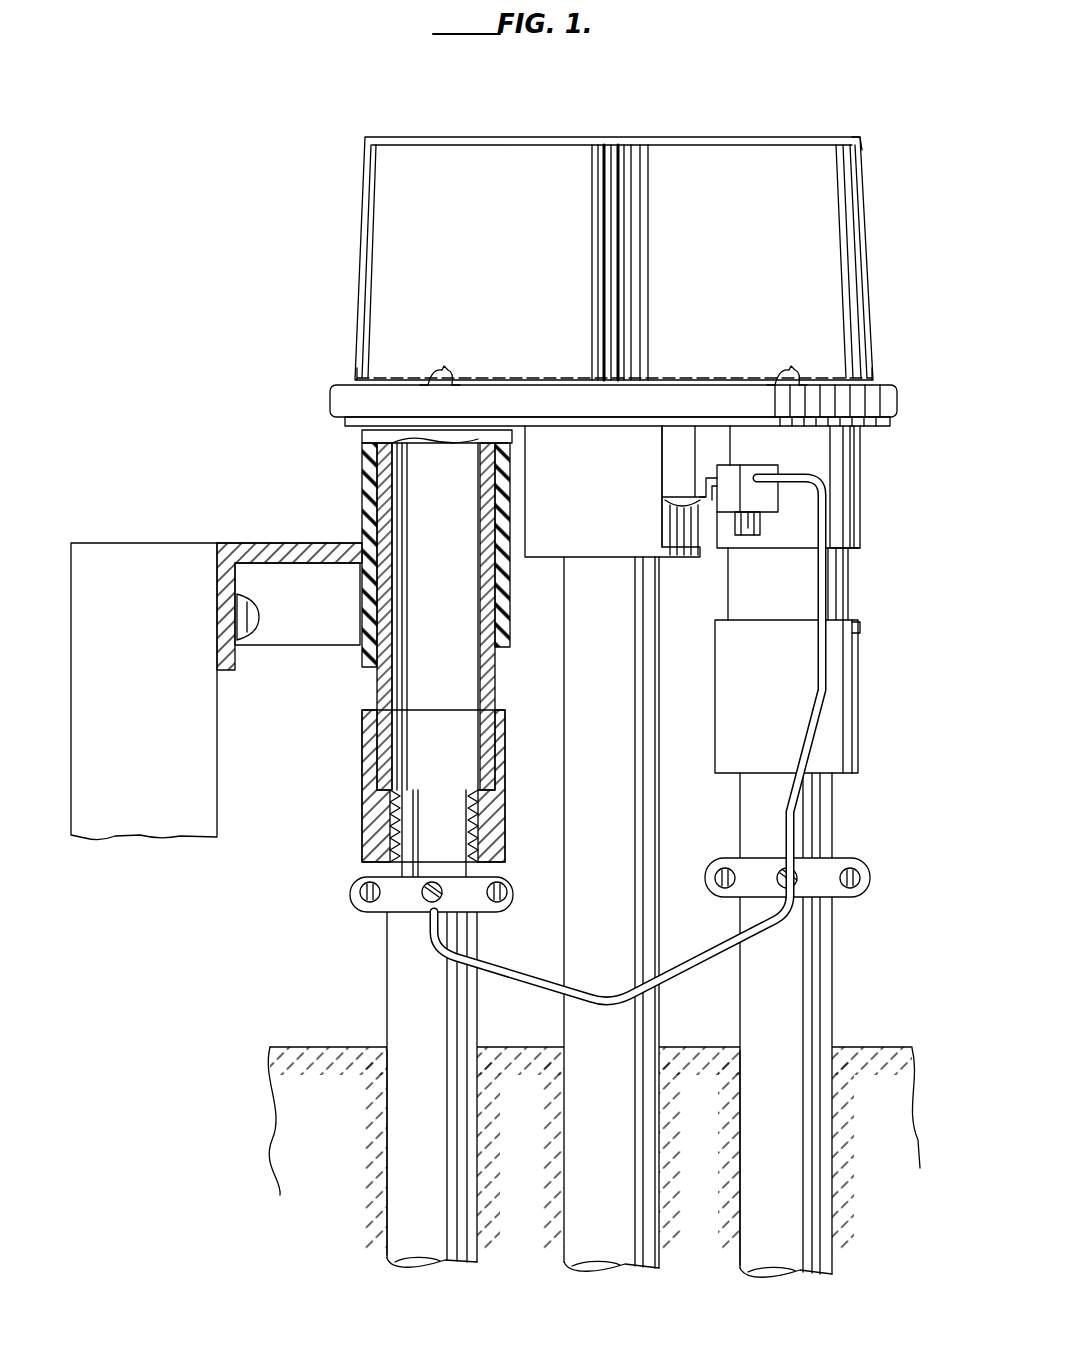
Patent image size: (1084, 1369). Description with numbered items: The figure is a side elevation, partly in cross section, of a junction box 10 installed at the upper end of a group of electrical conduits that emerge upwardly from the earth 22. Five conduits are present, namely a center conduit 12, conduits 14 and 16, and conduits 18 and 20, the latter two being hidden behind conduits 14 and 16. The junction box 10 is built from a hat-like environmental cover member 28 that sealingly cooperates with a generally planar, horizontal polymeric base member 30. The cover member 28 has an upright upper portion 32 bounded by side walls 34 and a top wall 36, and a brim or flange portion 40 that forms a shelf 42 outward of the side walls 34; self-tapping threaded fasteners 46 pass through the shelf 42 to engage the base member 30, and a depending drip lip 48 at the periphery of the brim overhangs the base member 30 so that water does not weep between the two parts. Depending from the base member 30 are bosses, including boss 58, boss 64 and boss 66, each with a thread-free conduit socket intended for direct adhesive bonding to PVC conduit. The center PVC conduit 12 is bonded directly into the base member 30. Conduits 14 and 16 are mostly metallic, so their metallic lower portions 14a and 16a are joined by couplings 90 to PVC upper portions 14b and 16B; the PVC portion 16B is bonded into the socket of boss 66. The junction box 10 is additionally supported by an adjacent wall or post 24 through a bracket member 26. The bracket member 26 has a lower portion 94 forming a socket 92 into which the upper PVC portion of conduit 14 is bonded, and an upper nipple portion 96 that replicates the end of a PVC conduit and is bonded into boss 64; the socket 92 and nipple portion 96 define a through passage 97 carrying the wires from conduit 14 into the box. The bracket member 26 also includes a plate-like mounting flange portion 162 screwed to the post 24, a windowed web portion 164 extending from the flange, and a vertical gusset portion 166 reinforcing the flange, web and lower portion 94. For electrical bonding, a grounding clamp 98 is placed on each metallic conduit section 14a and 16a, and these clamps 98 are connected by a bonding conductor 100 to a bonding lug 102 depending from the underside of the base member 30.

The junction box 10 is at (322, 116).
The center PVC conduit 12 is at (576, 773).
The conduit 14 is at (388, 966).
The metallic lower portion of conduit 14a is at (440, 1038).
The PVC upper portion of conduit 14b is at (378, 693).
The conduit 16 is at (833, 975).
The metallic lower portion of conduit 16a is at (794, 1041).
The PVC upper portion of conduit 16B is at (848, 603).
The conduit 18 is at (372, 935).
The conduit 20 is at (852, 1022).
The earth 22 is at (290, 1047).
The post 24 is at (106, 828).
The bracket member 26 is at (282, 540).
The environmental cover member 28 is at (664, 172).
The base member 30 is at (890, 428).
The upright upper portion 32 is at (863, 136).
The side walls 34 is at (386, 180).
The top wall 36 is at (497, 134).
The brim or flange portion 40 is at (878, 408).
The shelf 42 is at (347, 382).
The self-tapping threaded fastener 46 is at (440, 372).
The drip lip 48 is at (800, 428).
The boss 58 is at (622, 508).
The boss 64 is at (363, 502).
The boss 66 is at (858, 502).
The coupling 90 is at (363, 823).
The socket 92 is at (494, 620).
The lower portion of bracket 94 is at (508, 604).
The upper nipple portion 96 is at (370, 480).
The through passage 97 is at (400, 542).
The grounding clamp 98 is at (356, 884).
The bonding conductor 100 is at (819, 664).
The bonding lug 102 is at (760, 448).
The mounting flange portion 162 is at (236, 670).
The windowed web portion 164 is at (300, 566).
The vertical gusset portion 166 is at (316, 648).